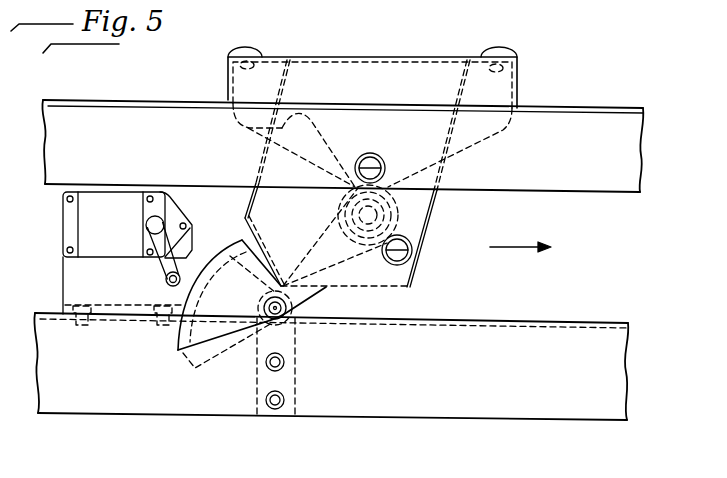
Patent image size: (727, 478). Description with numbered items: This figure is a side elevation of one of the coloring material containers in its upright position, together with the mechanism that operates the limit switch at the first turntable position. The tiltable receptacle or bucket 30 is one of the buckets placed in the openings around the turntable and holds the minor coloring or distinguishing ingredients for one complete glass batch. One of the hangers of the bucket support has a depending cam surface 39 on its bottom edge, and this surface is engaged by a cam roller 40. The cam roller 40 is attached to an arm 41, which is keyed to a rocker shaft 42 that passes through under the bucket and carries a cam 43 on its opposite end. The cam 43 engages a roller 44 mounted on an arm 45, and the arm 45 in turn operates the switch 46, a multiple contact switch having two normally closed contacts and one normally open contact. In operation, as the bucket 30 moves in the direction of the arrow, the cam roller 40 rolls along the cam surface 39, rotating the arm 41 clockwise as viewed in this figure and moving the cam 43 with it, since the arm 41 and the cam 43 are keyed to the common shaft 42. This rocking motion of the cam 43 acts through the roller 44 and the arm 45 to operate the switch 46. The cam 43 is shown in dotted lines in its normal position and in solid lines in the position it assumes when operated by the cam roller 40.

The bucket 30 is at (417, 218).
The cam surface 39 is at (462, 151).
The cam roller 40 is at (407, 205).
The arm 41 is at (313, 288).
The rocker shaft 42 is at (283, 314).
The cam 43 is at (218, 333).
The roller 44 is at (167, 282).
The arm 45 is at (178, 263).
The switch 46 is at (117, 205).